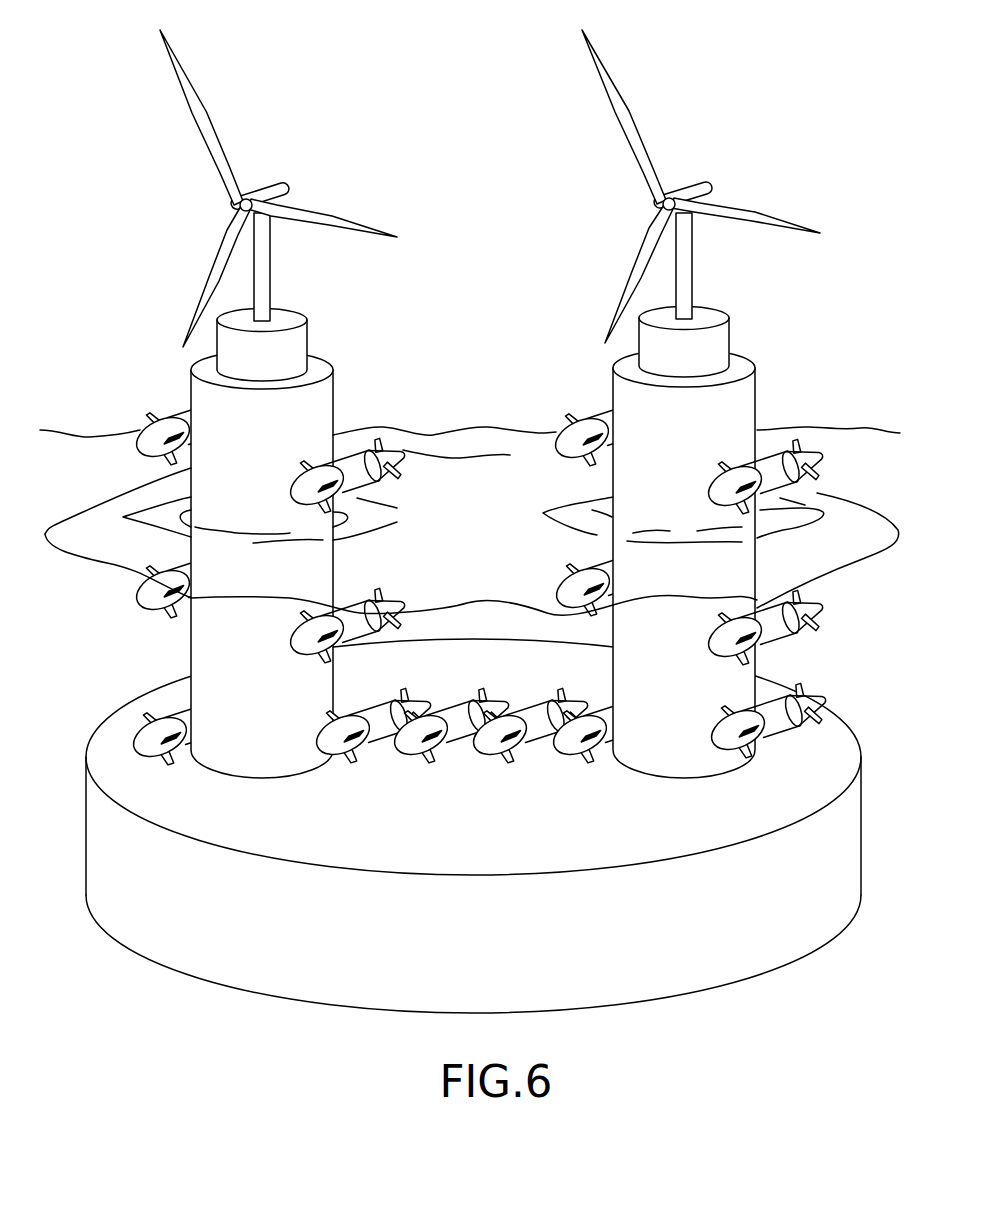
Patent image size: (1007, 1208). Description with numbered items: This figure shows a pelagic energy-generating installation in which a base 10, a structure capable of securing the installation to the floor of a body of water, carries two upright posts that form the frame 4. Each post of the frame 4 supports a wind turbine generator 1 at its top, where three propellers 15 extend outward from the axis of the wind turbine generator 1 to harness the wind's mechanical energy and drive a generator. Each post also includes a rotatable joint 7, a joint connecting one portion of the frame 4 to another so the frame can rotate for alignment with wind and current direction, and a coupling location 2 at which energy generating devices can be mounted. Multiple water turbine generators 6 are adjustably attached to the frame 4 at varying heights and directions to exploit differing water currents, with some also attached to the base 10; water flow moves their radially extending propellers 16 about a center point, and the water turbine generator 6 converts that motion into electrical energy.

The wind turbine generator 1 is at (701, 186).
The coupling location 2 is at (307, 333).
The frame 4 is at (757, 680).
The water turbine generator 6 is at (599, 402).
The rotatable joint 7 is at (714, 343).
The base 10 is at (225, 957).
The propellers 15 is at (621, 103).
The propellers 16 is at (571, 423).